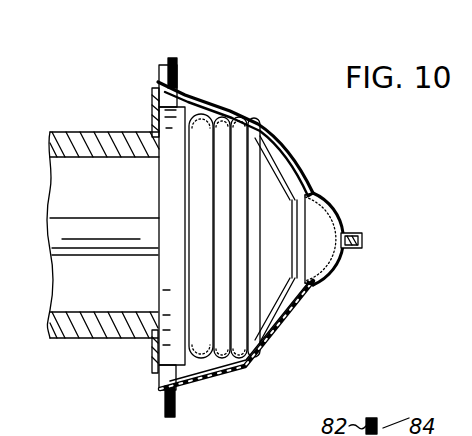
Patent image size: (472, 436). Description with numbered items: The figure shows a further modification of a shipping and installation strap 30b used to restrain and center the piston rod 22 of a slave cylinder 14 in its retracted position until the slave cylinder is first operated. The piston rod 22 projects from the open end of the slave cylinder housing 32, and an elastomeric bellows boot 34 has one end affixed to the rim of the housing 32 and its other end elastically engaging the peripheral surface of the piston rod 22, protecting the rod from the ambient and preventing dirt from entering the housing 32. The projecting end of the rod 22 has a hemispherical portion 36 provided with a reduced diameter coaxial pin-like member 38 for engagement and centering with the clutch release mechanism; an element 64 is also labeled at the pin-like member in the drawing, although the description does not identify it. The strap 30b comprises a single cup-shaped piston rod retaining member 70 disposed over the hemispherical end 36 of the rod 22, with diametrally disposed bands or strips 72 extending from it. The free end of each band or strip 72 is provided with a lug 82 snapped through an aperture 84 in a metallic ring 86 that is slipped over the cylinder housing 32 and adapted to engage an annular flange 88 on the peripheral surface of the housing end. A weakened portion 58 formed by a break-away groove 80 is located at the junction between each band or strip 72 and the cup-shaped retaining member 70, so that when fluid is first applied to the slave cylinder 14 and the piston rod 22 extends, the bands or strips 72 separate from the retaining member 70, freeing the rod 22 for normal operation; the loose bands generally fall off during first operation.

The slave cylinder 14 is at (61, 122).
The piston rod 22 is at (137, 226).
The shipping and installation strap 30b is at (292, 146).
The slave cylinder housing 32 is at (78, 338).
The elastomeric bellows boot 34 is at (207, 360).
The hemispherical portion 36 is at (331, 224).
The pin-like member 38 is at (363, 240).
The weakened portion 58 is at (313, 193).
The insert 64 is at (348, 249).
The cup-shaped piston rod retaining member 70 is at (339, 272).
The bands or strips 72 is at (232, 106).
The break-away groove 80 is at (320, 196).
The lug 82 is at (170, 65).
The aperture 84 is at (159, 80).
The metallic ring 86 is at (158, 95).
The annular flange 88 is at (158, 278).